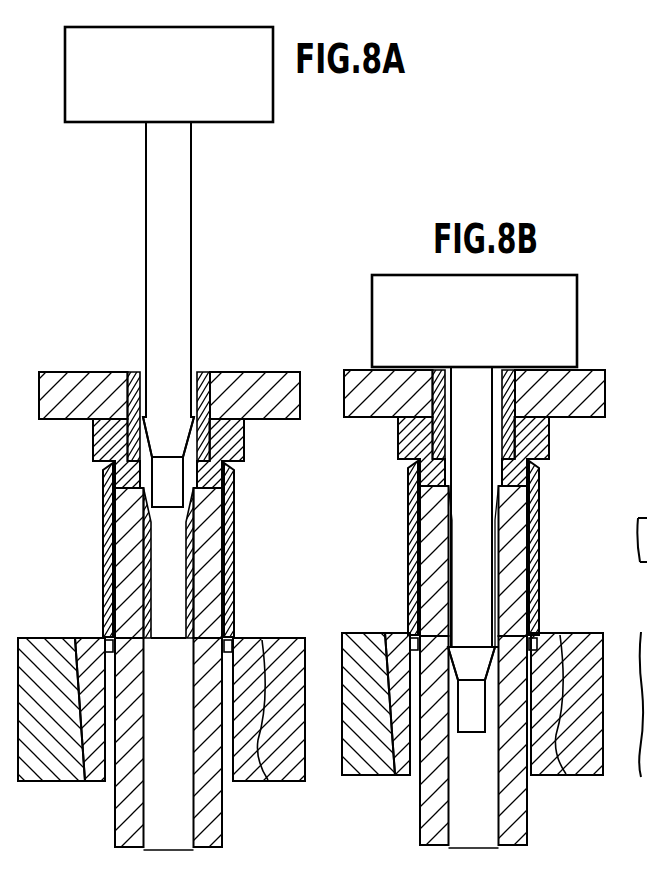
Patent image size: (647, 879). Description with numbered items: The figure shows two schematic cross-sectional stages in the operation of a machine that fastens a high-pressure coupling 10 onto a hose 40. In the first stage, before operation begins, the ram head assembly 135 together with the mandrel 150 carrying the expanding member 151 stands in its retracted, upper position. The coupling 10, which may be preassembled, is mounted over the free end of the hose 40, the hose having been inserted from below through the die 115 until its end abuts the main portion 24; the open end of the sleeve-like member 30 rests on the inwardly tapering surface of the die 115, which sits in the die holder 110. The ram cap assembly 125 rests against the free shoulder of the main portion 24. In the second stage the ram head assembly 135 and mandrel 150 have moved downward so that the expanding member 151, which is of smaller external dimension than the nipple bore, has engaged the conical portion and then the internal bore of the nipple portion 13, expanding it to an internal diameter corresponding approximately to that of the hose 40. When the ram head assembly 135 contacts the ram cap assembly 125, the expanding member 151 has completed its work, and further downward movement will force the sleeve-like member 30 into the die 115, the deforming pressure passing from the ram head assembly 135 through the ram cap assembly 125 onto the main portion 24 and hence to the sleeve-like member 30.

In FIG. 8A, the high-pressure coupling 10 is at (187, 656).
In FIG. 8B, the high-pressure coupling 10 is at (491, 654).
In FIG. 8A, the nipple portion 13 is at (147, 542).
In FIG. 8B, the nipple portion 13 is at (440, 525).
In FIG. 8A, the main portion 24 is at (232, 446).
In FIG. 8B, the main portion 24 is at (531, 447).
In FIG. 8A, the sleeve-like member 30 is at (230, 560).
In FIG. 8A, the hose 40 is at (210, 823).
In FIG. 8B, the hose 40 is at (515, 820).
In FIG. 8A, the die holder 110 is at (45, 650).
In FIG. 8B, the die holder 110 is at (350, 650).
In FIG. 8A, the die 115 is at (260, 650).
In FIG. 8B, the die 115 is at (554, 648).
In FIG. 8A, the ram cap assembly 125 is at (247, 385).
In FIG. 8B, the ram cap assembly 125 is at (576, 378).
In FIG. 8A, the ram head assembly 135 is at (242, 108).
In FIG. 8B, the ram head assembly 135 is at (553, 319).
In FIG. 8A, the mandrel 150 is at (180, 268).
In FIG. 8B, the mandrel 150 is at (478, 563).
In FIG. 8A, the expanding member 151 is at (157, 430).
In FIG. 8B, the expanding member 151 is at (464, 650).